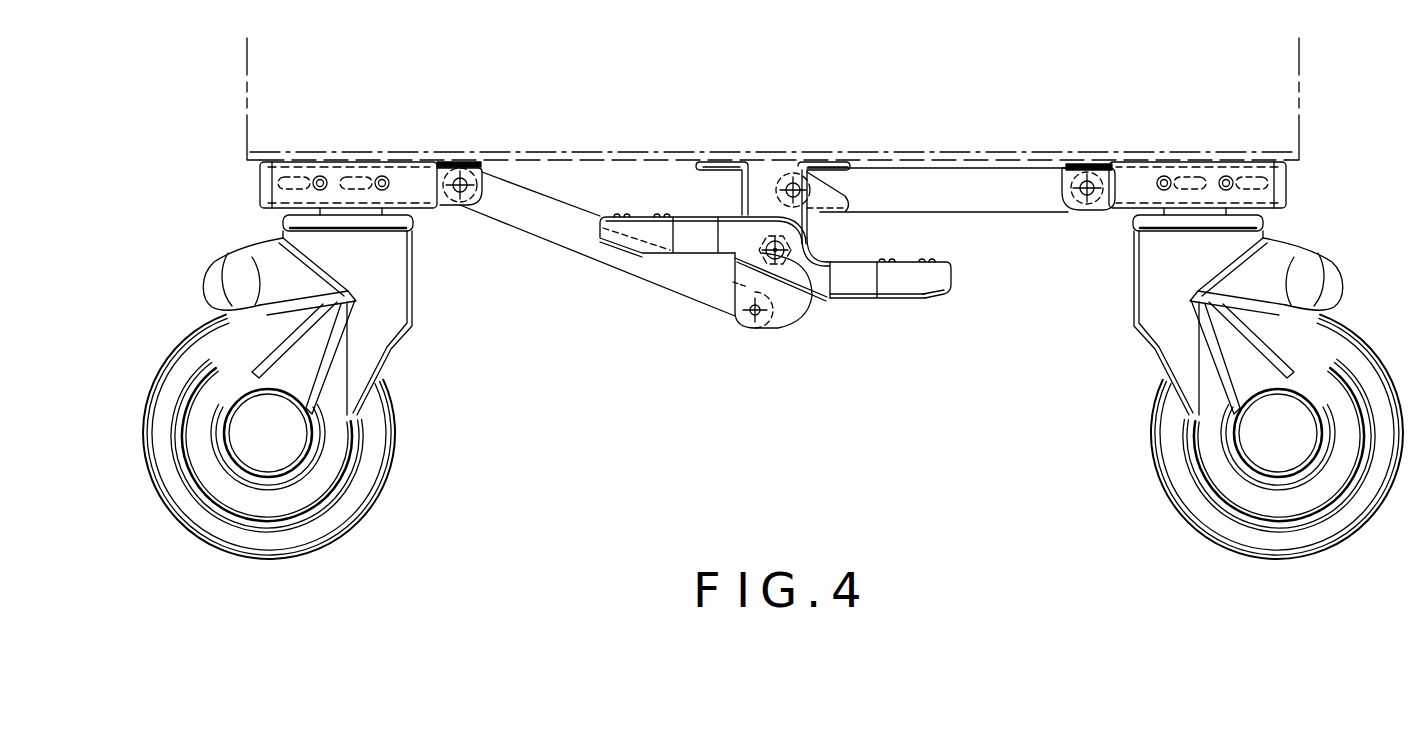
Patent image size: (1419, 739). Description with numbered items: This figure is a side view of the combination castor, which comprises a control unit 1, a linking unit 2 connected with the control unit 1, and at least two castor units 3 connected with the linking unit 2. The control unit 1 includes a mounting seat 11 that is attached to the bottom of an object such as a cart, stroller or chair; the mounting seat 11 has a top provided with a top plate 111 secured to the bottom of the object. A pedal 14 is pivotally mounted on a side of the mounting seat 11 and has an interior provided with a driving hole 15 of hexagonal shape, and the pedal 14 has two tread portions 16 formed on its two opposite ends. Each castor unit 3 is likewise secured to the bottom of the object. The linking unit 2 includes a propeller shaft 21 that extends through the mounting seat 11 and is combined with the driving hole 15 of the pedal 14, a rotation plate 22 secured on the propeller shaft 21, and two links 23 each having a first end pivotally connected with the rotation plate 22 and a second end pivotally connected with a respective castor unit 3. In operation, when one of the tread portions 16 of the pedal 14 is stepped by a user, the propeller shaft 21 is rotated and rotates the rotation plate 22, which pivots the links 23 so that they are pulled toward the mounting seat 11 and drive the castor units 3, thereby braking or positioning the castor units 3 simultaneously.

The control unit 1 is at (819, 284).
The mounting seat 11 is at (741, 136).
The top plate 111 is at (722, 163).
The pedal 14 is at (916, 333).
The driving hole 15 is at (815, 300).
The tread portions 16 is at (918, 280).
The linking unit 2 is at (776, 264).
The propeller shaft 21 is at (763, 262).
The rotation plate 22 is at (785, 315).
The links 23 is at (532, 225).
The castor units 3 is at (406, 449).